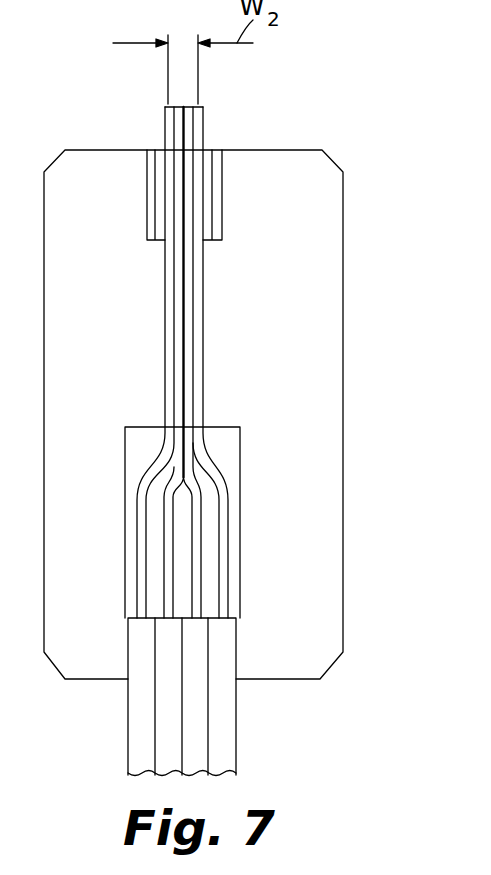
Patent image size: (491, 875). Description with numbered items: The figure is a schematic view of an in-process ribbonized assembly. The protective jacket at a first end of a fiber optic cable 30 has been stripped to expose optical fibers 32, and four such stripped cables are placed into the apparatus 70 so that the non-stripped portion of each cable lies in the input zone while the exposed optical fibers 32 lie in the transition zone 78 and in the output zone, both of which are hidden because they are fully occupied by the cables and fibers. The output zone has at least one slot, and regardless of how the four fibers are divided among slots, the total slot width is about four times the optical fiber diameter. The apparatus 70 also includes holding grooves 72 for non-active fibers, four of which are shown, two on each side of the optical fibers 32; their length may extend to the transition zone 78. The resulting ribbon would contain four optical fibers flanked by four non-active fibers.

The fiber optic cable 30 is at (138, 712).
The optical fibers 32 is at (140, 494).
The apparatus 70 is at (295, 122).
The holding groove 72 is at (157, 178).
The transition zone 78 is at (227, 458).